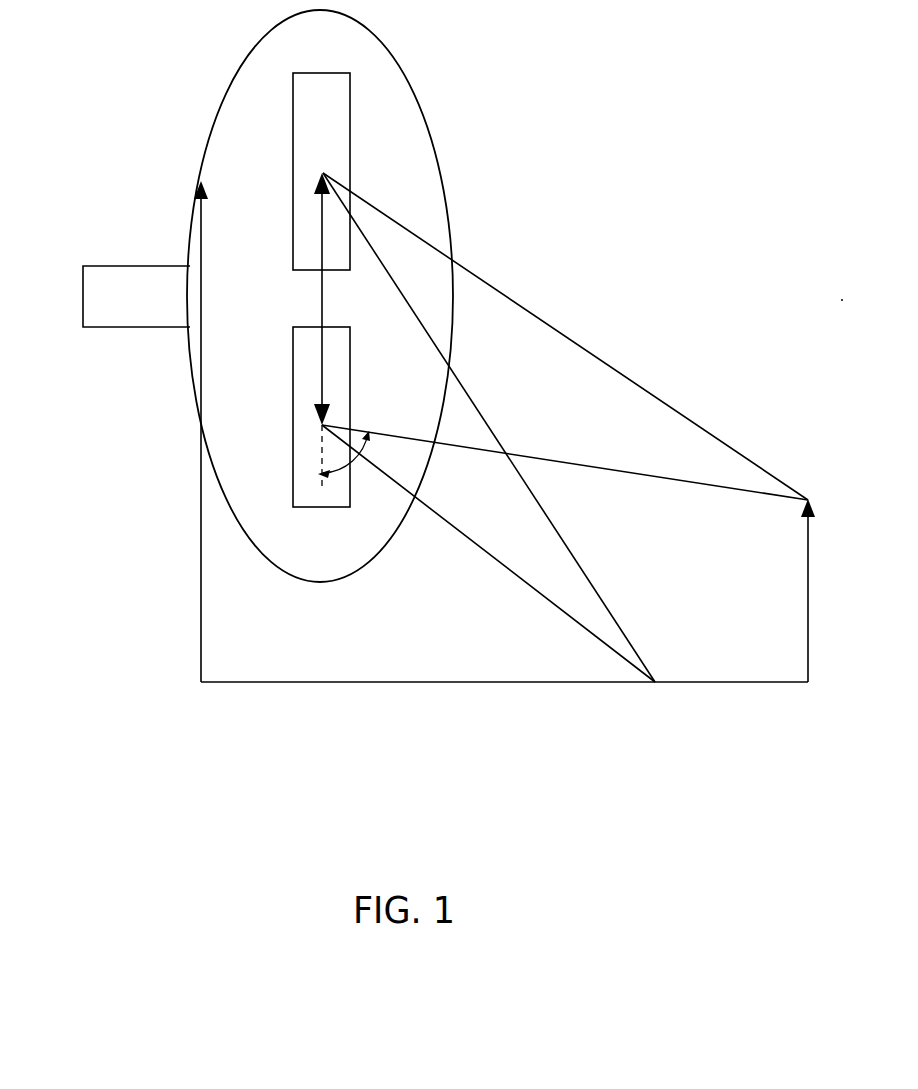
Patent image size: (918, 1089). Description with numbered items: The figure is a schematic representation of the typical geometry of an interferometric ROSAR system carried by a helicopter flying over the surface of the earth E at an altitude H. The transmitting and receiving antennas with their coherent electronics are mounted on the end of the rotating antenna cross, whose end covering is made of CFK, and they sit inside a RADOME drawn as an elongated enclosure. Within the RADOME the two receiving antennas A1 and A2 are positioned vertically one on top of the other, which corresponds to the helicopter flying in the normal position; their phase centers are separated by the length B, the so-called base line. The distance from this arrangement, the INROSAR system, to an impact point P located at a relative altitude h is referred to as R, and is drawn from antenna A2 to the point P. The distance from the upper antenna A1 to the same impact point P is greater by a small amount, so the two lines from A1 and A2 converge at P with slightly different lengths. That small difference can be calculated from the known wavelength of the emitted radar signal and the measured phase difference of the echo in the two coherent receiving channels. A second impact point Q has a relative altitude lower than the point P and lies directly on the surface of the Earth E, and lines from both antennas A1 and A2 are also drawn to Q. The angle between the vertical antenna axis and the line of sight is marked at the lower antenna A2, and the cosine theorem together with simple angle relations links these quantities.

The radome RADOME is at (233, 83).
The antenna A1 is at (337, 92).
The antenna A2 is at (325, 500).
The base line B is at (320, 298).
The altitude H is at (191, 431).
The relative altitude h is at (814, 590).
The distance R is at (565, 553).
The impact point P is at (819, 501).
The impact point Q is at (667, 669).
The surface of the Earth E is at (820, 683).
The end of antenna cross covering made of CFK is at (140, 318).